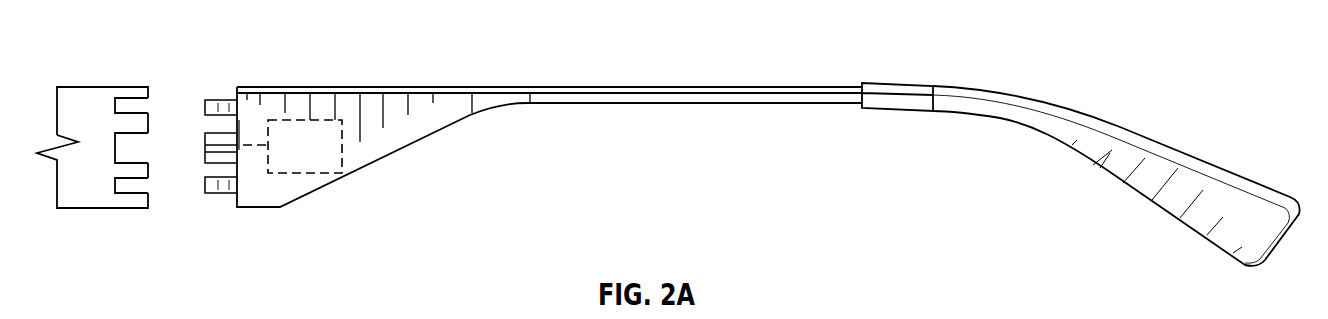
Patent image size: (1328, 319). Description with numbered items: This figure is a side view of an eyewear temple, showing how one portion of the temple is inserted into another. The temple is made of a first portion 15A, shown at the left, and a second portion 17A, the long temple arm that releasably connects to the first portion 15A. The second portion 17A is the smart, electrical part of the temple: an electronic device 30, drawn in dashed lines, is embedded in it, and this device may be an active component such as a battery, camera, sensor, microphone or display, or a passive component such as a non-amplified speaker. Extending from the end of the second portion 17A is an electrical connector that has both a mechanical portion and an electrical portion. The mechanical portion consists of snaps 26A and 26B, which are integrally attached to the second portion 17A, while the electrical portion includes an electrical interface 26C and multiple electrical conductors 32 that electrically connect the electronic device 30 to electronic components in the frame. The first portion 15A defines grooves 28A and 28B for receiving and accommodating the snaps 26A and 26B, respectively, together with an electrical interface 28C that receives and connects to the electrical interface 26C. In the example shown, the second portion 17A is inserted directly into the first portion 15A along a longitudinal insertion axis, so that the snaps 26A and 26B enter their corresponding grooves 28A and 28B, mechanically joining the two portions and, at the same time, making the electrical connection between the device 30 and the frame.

The first portion 15A is at (69, 87).
The second portion 17A is at (767, 88).
The snap 26A is at (222, 203).
The snap 26B is at (222, 99).
The electrical interface 26C is at (205, 138).
The groove 28A is at (133, 197).
The groove 28B is at (133, 99).
The electrical interface 28C is at (115, 140).
The electronic device 30 is at (313, 120).
The electrical conductors 32 is at (228, 128).